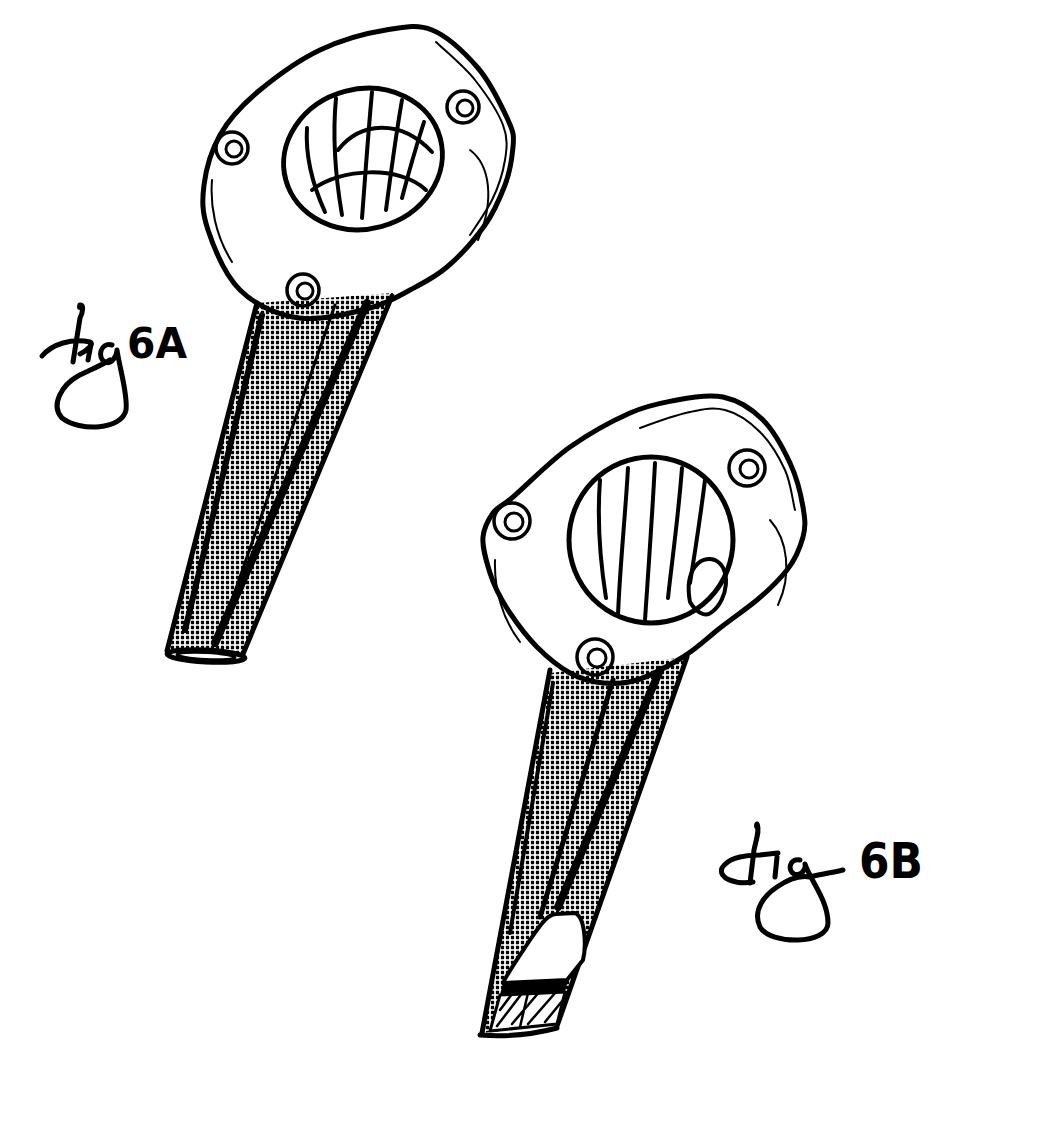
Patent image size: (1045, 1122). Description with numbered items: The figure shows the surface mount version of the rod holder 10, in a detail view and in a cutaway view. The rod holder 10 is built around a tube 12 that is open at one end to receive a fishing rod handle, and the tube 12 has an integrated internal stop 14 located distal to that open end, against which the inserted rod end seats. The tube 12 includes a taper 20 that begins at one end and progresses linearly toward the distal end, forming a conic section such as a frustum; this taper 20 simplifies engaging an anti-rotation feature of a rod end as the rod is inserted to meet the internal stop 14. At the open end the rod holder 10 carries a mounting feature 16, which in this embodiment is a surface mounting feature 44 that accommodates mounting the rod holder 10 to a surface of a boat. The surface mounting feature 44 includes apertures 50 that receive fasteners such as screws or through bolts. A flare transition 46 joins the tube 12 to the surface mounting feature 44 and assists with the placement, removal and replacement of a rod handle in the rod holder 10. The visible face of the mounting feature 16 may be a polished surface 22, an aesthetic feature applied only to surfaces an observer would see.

In FIG. 6A, the rod holder 10 is at (340, 545).
In FIG. 6A, the tube 12 is at (352, 378).
In FIG. 6B, the tube 12 is at (657, 692).
In FIG. 6A, the internal stop 14 is at (201, 664).
In FIG. 6B, the internal stop 14 is at (524, 1030).
In FIG. 6A, the mounting feature 16 is at (514, 80).
In FIG. 6B, the mounting feature 16 is at (801, 437).
In FIG. 6A, the taper 20 is at (159, 450).
In FIG. 6B, the taper 20 is at (463, 1027).
In FIG. 6A, the polished surface 22 is at (303, 92).
In FIG. 6B, the polished surface 22 is at (675, 415).
In FIG. 6A, the surface mounting feature 44 is at (492, 172).
In FIG. 6B, the surface mounting feature 44 is at (782, 543).
In FIG. 6B, the flare transition 46 is at (700, 627).
In FIG. 6A, the apertures 50 is at (213, 142).
In FIG. 6B, the apertures 50 is at (747, 450).